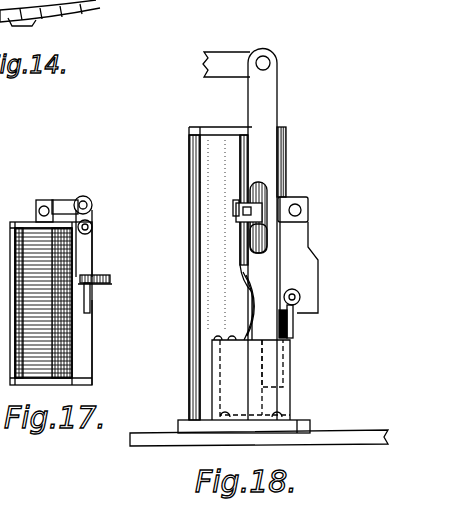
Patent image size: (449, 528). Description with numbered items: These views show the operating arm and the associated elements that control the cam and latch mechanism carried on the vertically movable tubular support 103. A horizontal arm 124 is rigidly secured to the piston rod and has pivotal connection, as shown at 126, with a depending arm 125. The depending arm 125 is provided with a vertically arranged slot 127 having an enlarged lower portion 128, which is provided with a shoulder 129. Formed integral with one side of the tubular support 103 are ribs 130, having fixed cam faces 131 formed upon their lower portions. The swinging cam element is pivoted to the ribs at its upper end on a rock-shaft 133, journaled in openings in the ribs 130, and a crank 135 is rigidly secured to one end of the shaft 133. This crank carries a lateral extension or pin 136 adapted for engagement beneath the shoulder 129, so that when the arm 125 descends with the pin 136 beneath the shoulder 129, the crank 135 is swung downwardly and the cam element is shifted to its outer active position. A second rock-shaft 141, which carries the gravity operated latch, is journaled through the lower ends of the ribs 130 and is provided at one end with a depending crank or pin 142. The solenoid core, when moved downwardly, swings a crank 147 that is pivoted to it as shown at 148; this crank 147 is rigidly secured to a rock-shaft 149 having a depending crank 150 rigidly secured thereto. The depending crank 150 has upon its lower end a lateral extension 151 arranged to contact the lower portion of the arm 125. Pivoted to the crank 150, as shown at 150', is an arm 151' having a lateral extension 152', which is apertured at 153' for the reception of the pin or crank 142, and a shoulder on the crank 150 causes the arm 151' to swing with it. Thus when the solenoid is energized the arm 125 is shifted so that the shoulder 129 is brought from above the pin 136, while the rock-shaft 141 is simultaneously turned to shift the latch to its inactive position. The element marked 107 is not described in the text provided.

In FIG. 18, the tubular support 103 is at (206, 160).
In FIG. 18, the column 107 is at (190, 130).
In FIG. 18, the horizontal arm 124 is at (222, 60).
In FIG. 18, the depending arm 125 is at (268, 89).
In FIG. 18, the pivotal connection 126 is at (272, 63).
In FIG. 18, the vertically arranged slot 127 is at (264, 192).
In FIG. 18, the enlarged lower portion 128 is at (270, 238).
In FIG. 18, the shoulder 129 is at (238, 206).
In FIG. 18, the ribs 130 is at (290, 268).
In FIG. 18, the fixed cam faces 131 is at (320, 256).
In FIG. 18, the rock-shaft 133 is at (302, 211).
In FIG. 18, the crank 135 is at (308, 202).
In FIG. 18, the lateral extension or pin 136 is at (240, 212).
In FIG. 18, the rock-shaft 141 is at (302, 297).
In FIG. 18, the depending crank or pin 142 is at (297, 330).
In FIG. 17, the crank 147 is at (63, 200).
In FIG. 17, the pivot 148 is at (40, 201).
In FIG. 17, the rock-shaft 149 is at (89, 199).
In FIG. 17, the depending crank 150 is at (102, 229).
In FIG. 17, the pivot 150' is at (108, 243).
In FIG. 17, the lateral extension 151 is at (110, 272).
In FIG. 17, the arm 151' is at (106, 298).
In FIG. 17, the lateral extension 152' is at (112, 286).
In FIG. 17, the aperture 153' is at (132, 342).